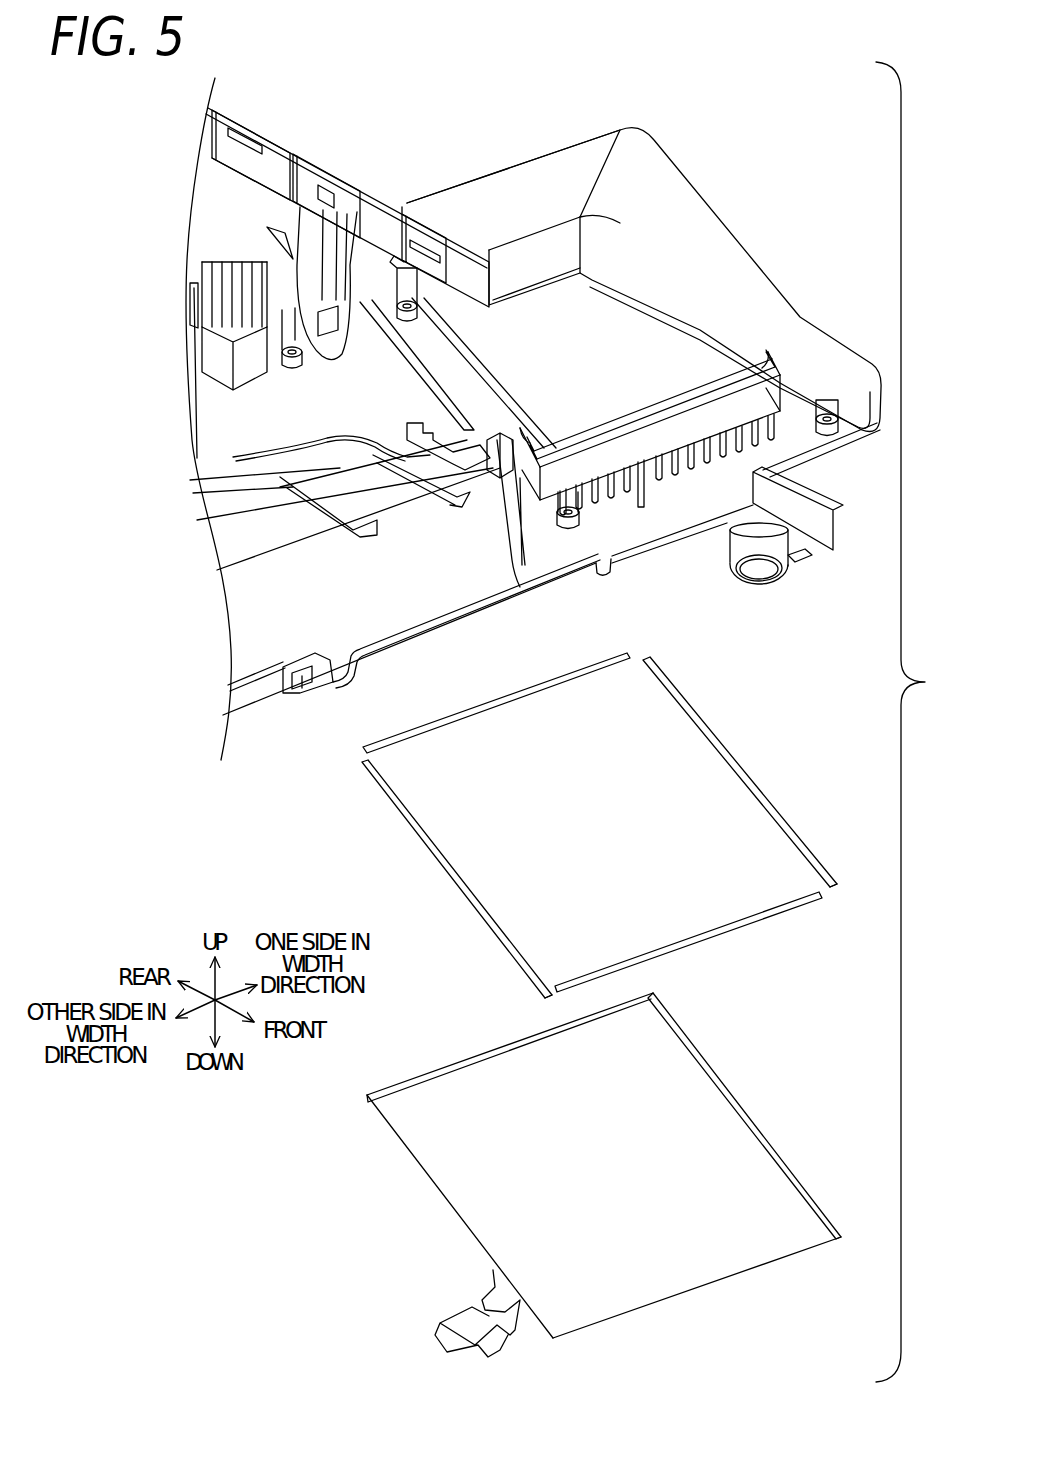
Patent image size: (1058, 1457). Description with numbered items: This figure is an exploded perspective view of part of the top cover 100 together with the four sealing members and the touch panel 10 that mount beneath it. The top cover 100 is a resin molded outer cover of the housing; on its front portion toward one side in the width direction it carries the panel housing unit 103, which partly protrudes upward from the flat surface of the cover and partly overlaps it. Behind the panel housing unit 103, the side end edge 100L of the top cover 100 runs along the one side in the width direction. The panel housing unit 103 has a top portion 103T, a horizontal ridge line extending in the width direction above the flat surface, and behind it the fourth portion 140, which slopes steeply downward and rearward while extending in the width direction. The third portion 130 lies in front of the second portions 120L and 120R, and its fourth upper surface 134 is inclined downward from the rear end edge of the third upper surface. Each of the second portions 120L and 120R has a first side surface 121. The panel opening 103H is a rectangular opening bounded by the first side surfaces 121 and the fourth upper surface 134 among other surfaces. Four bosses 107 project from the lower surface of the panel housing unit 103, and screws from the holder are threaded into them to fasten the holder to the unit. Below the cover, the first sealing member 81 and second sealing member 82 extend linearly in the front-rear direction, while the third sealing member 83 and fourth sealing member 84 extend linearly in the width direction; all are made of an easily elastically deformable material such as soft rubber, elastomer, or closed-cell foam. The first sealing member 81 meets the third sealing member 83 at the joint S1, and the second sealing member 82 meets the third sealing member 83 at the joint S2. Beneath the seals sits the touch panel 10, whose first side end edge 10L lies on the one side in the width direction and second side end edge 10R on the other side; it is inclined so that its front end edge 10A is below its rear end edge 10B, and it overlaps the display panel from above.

The top cover 100 is at (203, 603).
The side end edge 100L is at (340, 171).
The panel housing unit 103 is at (553, 140).
The top portion 103T is at (517, 165).
The fourth portion 140 is at (483, 217).
The panel opening 103H is at (483, 370).
The second portion 120R is at (550, 440).
The second portion 120L is at (767, 380).
The first side surface 121 is at (530, 437).
The third portion 130 is at (633, 427).
The fourth upper surface 134 is at (600, 440).
The boss 107 is at (292, 360).
The fourth sealing member 84 is at (497, 696).
The first sealing member 81 is at (733, 773).
The second sealing member 82 is at (453, 870).
The third sealing member 83 is at (683, 940).
The joint S1 is at (807, 880).
The joint S2 is at (548, 980).
The touch panel 10 is at (787, 1270).
The rear end edge 10B is at (473, 1053).
The first side end edge 10L is at (750, 1113).
The second side end edge 10R is at (450, 1210).
The front end edge 10A is at (693, 1287).